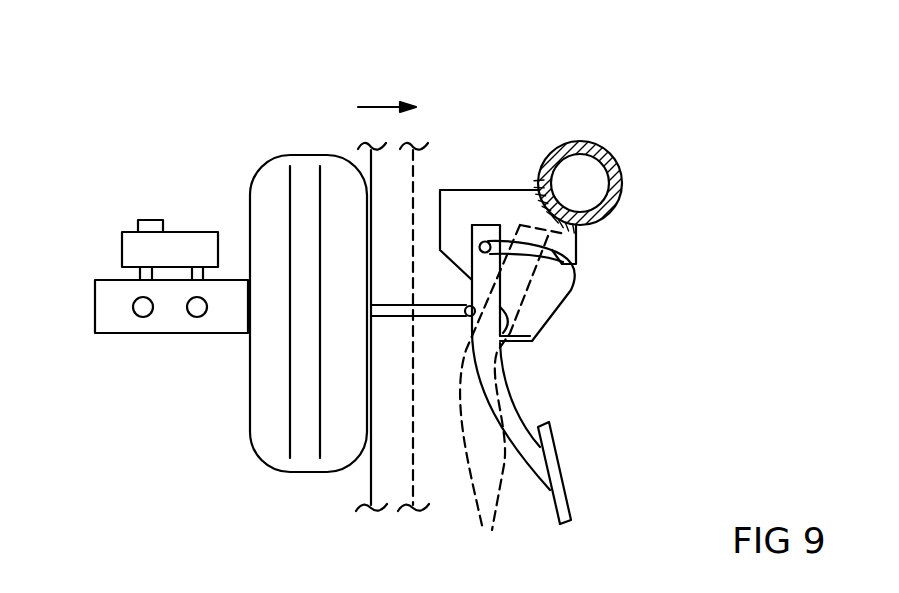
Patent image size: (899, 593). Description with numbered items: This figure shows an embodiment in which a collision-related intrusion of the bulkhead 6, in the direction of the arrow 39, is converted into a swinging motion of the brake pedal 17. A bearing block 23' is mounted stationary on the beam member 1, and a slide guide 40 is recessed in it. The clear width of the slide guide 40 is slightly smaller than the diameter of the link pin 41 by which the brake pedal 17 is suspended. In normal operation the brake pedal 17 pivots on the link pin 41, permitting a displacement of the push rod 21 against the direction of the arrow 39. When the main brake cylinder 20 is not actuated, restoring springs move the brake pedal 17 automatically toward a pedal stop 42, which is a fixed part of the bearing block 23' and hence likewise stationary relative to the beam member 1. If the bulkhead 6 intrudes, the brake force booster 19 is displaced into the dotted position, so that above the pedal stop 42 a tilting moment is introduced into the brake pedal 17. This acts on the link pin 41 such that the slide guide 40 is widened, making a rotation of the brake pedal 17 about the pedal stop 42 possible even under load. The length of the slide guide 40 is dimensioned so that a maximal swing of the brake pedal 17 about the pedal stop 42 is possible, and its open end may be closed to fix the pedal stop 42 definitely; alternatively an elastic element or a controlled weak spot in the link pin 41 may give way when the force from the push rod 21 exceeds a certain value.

The beam member 1 is at (560, 155).
The bulkhead 6 is at (373, 180).
The brake pedal 17 is at (500, 412).
The brake force booster 19 is at (267, 223).
The main brake cylinder 20 is at (114, 303).
The push rod 21 is at (438, 310).
The bearing block 23' is at (489, 155).
The arrow 39 is at (380, 107).
The slide guide 40 is at (564, 259).
The link pin 41 is at (486, 246).
The pedal stop 42 is at (499, 338).